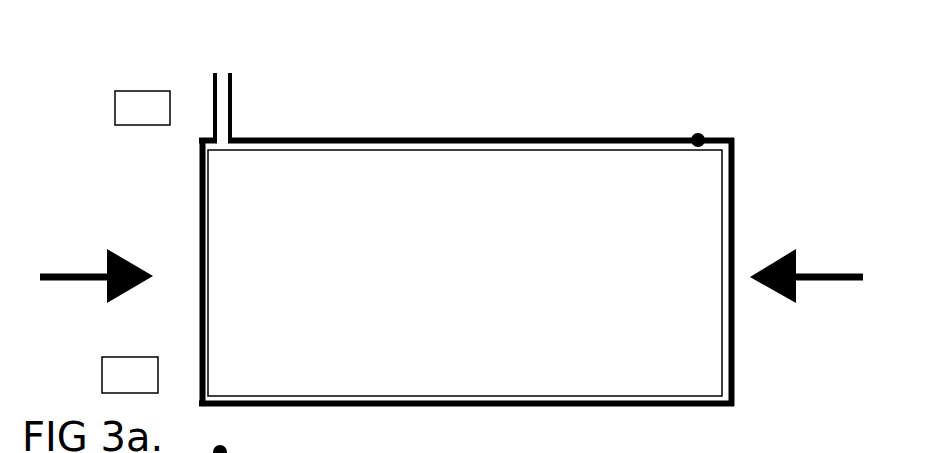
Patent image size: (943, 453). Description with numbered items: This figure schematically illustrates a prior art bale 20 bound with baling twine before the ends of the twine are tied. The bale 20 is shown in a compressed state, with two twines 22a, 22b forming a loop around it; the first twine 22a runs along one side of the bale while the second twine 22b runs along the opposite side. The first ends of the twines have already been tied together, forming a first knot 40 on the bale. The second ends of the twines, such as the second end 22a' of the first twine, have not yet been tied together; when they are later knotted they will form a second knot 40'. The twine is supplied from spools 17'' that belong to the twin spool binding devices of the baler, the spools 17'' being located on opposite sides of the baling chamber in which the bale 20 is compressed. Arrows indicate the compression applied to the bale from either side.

The bale 20 is at (484, 274).
The twine 22a is at (466, 111).
The second end of twine 22a' is at (278, 103).
The twine 22b is at (214, 92).
The first knot 40 is at (688, 106).
The second knot 40' is at (279, 440).
The spool 17'' is at (101, 211).